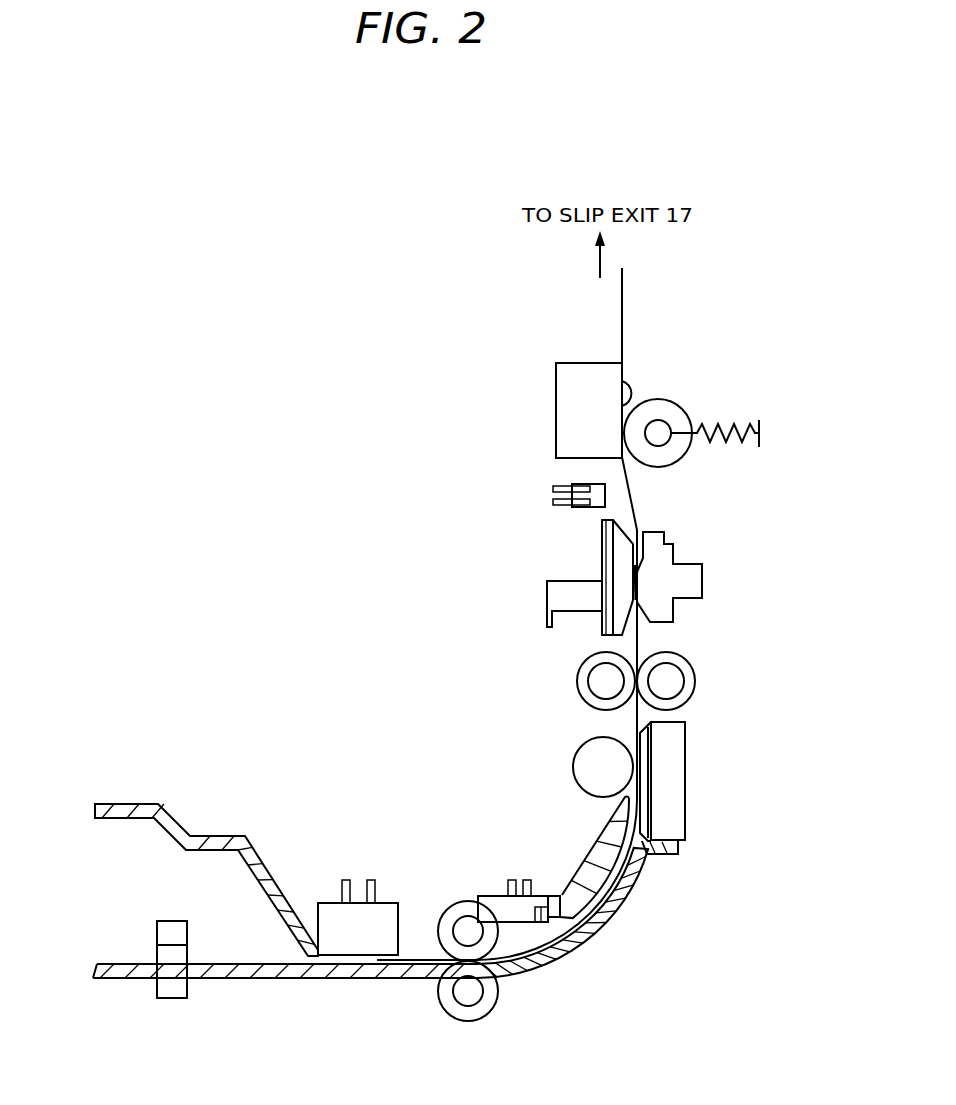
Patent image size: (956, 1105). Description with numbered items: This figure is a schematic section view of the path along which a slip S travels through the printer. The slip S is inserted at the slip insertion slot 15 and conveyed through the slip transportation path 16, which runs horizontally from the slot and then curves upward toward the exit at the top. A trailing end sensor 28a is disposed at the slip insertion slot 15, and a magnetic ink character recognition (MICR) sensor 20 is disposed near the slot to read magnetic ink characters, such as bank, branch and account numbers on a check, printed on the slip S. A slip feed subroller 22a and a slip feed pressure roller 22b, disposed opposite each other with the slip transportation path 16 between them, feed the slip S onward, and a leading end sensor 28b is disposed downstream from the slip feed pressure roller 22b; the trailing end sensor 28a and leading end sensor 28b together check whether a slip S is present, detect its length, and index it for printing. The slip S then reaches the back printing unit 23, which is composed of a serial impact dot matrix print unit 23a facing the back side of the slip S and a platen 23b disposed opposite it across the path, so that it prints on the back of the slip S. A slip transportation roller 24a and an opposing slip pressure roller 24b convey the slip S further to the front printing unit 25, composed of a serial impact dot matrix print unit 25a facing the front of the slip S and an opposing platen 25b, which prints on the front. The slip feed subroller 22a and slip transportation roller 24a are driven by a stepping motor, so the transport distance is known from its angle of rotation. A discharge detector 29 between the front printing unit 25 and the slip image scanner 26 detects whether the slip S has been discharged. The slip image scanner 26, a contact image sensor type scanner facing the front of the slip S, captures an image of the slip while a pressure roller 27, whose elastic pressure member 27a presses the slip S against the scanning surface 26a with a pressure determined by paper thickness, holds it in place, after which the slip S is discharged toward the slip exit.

The slip insertion slot 15 is at (128, 918).
The slip transportation path 16 is at (547, 947).
The magnetic ink character recognition (MICR) sensor 20 is at (325, 900).
The slip feed subroller 22a is at (470, 1010).
The slip feed pressure roller 22b is at (468, 910).
The back printing unit 23 is at (711, 788).
The serial impact dot matrix print unit 23a is at (667, 800).
The platen 23b is at (616, 757).
The slip transportation roller 24a is at (692, 669).
The slip pressure roller 24b is at (578, 690).
The front printing unit 25 is at (698, 577).
The serial impact dot matrix print unit 25a is at (620, 603).
The platen 25b is at (678, 580).
The slip image scanner 26 is at (567, 393).
The scanning surface 26a is at (632, 408).
The pressure roller 27 is at (678, 418).
The pressure member 27a is at (725, 445).
The trailing end sensor 28a is at (175, 988).
The leading end sensor 28b is at (530, 898).
The discharge detector 29 is at (588, 508).
The slip S is at (622, 305).